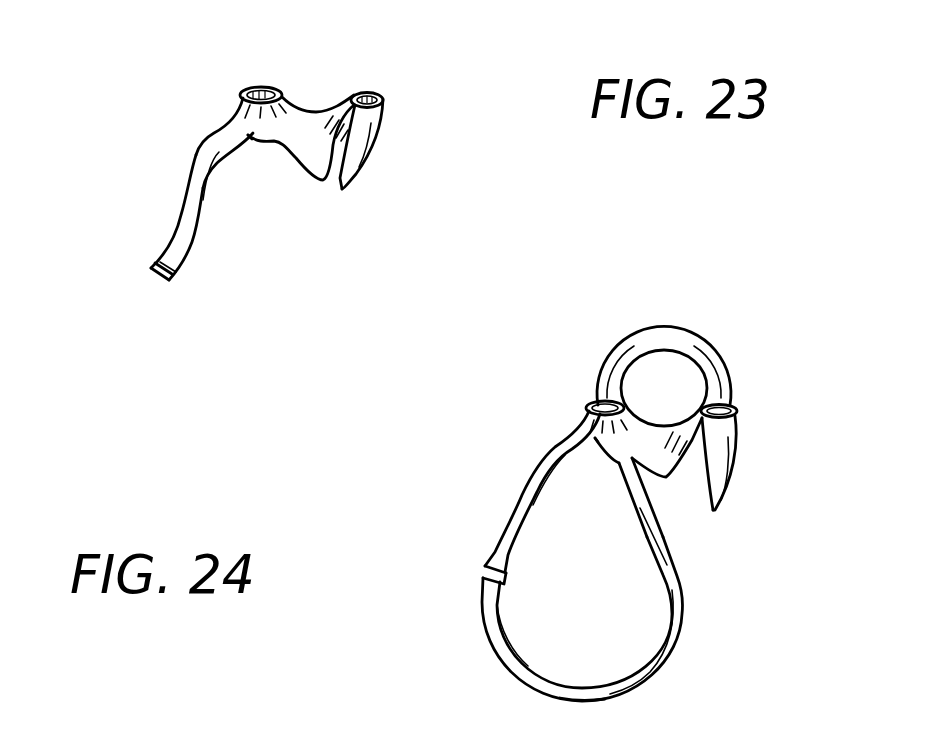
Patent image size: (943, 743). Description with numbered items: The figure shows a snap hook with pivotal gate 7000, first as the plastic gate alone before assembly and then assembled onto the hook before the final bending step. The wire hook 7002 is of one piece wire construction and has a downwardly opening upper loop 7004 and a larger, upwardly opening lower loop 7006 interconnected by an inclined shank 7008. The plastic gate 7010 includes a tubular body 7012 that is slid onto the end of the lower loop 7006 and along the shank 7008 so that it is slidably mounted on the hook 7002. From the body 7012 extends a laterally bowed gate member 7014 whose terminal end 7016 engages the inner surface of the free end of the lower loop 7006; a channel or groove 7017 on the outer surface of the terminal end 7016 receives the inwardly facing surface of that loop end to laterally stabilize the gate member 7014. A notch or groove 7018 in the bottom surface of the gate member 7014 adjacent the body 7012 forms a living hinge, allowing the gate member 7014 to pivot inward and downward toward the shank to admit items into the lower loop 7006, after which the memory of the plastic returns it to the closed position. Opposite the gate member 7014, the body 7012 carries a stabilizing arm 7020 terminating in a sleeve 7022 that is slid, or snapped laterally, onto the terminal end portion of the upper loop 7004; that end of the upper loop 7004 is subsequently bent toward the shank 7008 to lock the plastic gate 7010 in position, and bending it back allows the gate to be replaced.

In FIG. 24, the snap hook with pivotal gate 7000 is at (690, 682).
In FIG. 24, the wire hook 7002 is at (702, 627).
In FIG. 24, the upper loop 7004 is at (715, 360).
In FIG. 24, the lower loop 7006 is at (565, 693).
In FIG. 24, the inclined shank 7008 is at (638, 530).
In FIG. 23, the plastic gate 7010 is at (213, 112).
In FIG. 24, the plastic gate 7010 is at (657, 385).
In FIG. 23, the tubular body 7012 is at (275, 91).
In FIG. 24, the tubular body 7012 is at (591, 403).
In FIG. 23, the bowed gate member 7014 is at (197, 163).
In FIG. 24, the bowed gate member 7014 is at (533, 472).
In FIG. 23, the terminal end 7016 is at (173, 257).
In FIG. 24, the terminal end 7016 is at (503, 576).
In FIG. 23, the channel or groove 7017 is at (152, 268).
In FIG. 24, the channel or groove 7017 is at (493, 552).
In FIG. 23, the notch or groove 7018 is at (247, 140).
In FIG. 24, the notch or groove 7018 is at (593, 441).
In FIG. 23, the stabilizing arm 7020 is at (302, 123).
In FIG. 24, the stabilizing arm 7020 is at (677, 467).
In FIG. 23, the sleeve 7022 is at (367, 150).
In FIG. 24, the sleeve 7022 is at (724, 435).